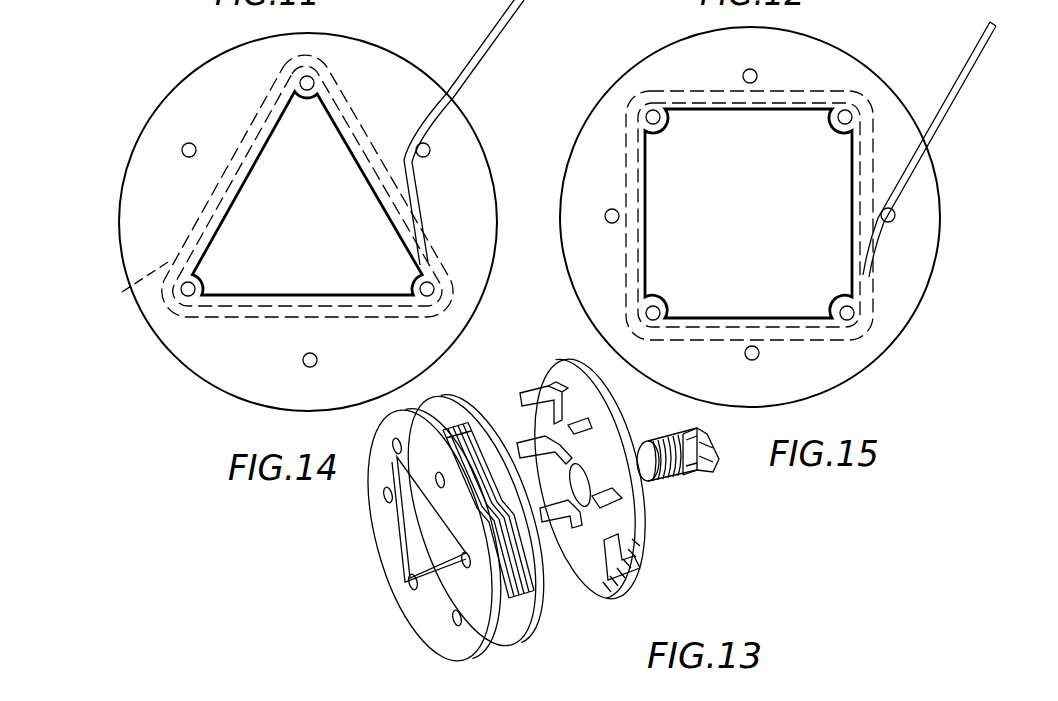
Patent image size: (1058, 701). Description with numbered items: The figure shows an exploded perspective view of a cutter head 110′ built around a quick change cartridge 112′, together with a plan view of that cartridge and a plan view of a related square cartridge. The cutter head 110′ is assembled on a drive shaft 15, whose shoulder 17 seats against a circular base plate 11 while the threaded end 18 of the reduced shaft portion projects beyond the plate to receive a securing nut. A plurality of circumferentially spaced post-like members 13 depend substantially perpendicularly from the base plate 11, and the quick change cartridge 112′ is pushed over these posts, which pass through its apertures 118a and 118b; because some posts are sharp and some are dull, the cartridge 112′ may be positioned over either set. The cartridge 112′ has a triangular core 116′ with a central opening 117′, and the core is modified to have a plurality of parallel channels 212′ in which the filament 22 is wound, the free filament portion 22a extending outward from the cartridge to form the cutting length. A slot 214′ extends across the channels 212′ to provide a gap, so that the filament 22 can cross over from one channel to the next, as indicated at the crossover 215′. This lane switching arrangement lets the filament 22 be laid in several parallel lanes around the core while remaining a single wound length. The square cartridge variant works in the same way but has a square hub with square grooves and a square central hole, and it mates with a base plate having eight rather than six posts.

In FIG. 13, the base plate 11 is at (637, 560).
In FIG. 13, the post-like members 13 is at (578, 388).
In FIG. 13, the drive shaft 15 is at (712, 468).
In FIG. 13, the shoulder 17 is at (683, 482).
In FIG. 13, the threaded end 18 is at (655, 440).
In FIG. 15, the filament 22 is at (895, 175).
In FIG. 14, the pull tab strip 22a is at (512, 26).
In FIG. 15, the pull tab strip 22a is at (938, 103).
In FIG. 13, the cutter head 110′ is at (620, 616).
In FIG. 14, the quick change cartridge 112′ is at (455, 116).
In FIG. 13, the quick change cartridge 112′ is at (420, 622).
In FIG. 14, the triangular core 116′ is at (240, 190).
In FIG. 14, the central opening 117′ is at (375, 230).
In FIG. 13, the central opening 117′ is at (420, 538).
In FIG. 14, the apertures 118a is at (184, 292).
In FIG. 15, the apertures 118a is at (850, 113).
In FIG. 13, the apertures 118a is at (431, 514).
In FIG. 14, the apertures 118b is at (312, 77).
In FIG. 15, the apertures 118b is at (757, 76).
In FIG. 13, the apertures 118b is at (422, 549).
In FIG. 14, the channels 212′ is at (270, 187).
In FIG. 13, the channels 212′ is at (515, 590).
In FIG. 13, the slot 214′ is at (492, 520).
In FIG. 13, the filament crossover 215′ is at (478, 530).